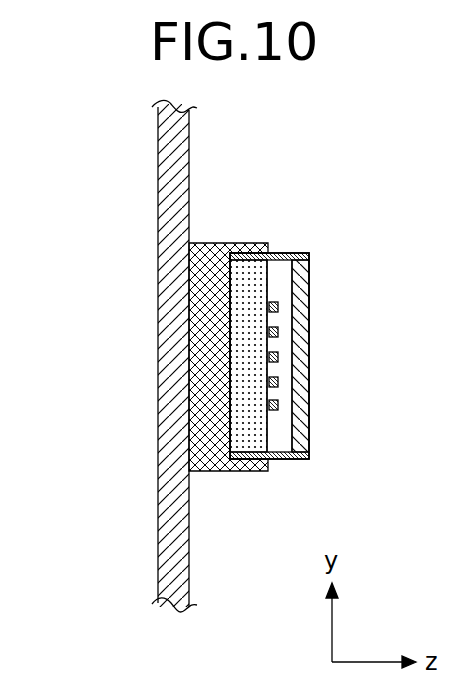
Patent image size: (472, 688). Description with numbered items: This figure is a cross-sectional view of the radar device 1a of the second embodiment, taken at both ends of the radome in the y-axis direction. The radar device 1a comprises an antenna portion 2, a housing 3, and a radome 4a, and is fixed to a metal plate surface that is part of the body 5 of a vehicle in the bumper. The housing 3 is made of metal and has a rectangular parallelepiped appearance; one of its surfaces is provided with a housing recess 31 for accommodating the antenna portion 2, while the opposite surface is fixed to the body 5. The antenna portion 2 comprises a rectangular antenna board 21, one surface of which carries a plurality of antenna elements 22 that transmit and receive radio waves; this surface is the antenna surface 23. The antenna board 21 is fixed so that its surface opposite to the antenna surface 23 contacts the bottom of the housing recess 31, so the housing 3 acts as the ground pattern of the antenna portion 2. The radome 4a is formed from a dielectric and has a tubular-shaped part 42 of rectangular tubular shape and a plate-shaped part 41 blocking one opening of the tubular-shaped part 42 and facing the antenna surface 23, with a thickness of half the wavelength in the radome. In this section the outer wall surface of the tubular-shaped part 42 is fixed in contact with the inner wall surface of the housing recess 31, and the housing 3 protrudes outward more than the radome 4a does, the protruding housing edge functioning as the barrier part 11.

The radar device 1a is at (399, 193).
The antenna portion 2 is at (280, 287).
The housing 3 is at (216, 247).
The radome 4a is at (302, 312).
The body 5 is at (177, 181).
The barrier part 11 is at (277, 243).
The antenna board 21 is at (262, 424).
The antenna elements 22 is at (275, 382).
The antenna surface 23 is at (285, 438).
The housing recess 31 is at (252, 373).
The plate-shaped part 41 is at (300, 355).
The tubular-shaped part 42 is at (290, 252).